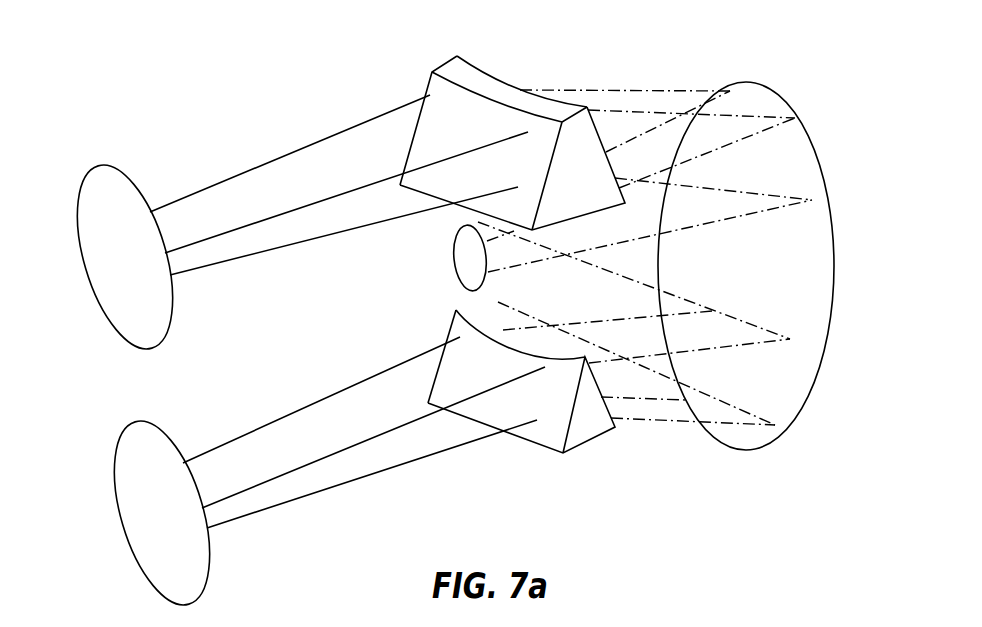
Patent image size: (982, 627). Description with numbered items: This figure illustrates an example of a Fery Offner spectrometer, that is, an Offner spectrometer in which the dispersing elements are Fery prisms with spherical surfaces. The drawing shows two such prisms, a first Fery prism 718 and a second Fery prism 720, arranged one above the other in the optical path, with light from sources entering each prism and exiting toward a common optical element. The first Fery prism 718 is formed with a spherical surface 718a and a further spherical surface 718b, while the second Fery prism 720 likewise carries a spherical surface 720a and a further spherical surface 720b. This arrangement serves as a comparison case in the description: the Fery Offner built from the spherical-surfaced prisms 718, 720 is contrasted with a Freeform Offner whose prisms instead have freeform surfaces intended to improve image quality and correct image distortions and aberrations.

The Fery prism 718 is at (455, 119).
The spherical surface 718a is at (437, 95).
The spherical surface 718b is at (463, 67).
The Fery prism 720 is at (456, 341).
The spherical surface 720a is at (450, 328).
The spherical surface 720b is at (456, 310).